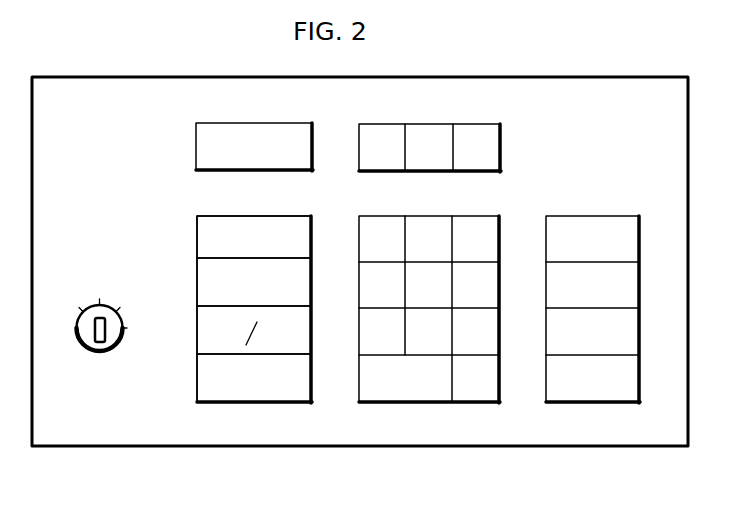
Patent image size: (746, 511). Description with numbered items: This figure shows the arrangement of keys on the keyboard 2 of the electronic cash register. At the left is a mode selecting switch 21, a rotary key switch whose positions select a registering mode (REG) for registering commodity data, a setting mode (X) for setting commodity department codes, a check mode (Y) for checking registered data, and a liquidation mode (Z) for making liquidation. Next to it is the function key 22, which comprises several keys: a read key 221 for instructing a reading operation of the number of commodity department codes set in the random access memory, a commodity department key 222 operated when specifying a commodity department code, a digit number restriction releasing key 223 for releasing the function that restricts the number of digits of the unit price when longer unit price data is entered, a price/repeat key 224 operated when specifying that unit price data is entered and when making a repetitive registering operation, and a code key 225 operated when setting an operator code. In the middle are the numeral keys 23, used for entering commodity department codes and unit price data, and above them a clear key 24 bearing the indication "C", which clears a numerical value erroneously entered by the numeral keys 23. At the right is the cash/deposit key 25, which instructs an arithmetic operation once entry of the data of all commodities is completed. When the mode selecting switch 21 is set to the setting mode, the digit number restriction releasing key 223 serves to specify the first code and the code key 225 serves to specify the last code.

The keyboard 2 is at (563, 75).
The mode selecting switch 21 is at (97, 355).
The function key 22 is at (226, 354).
The read key 221 is at (199, 140).
The commodity department key 222 is at (199, 231).
The digit number restriction releasing key 223 is at (198, 273).
The price/repeat key 224 is at (200, 339).
The code key 225 is at (201, 391).
The numeral keys 23 is at (415, 411).
The clear key 24 is at (393, 128).
The cash/deposit key 25 is at (611, 398).